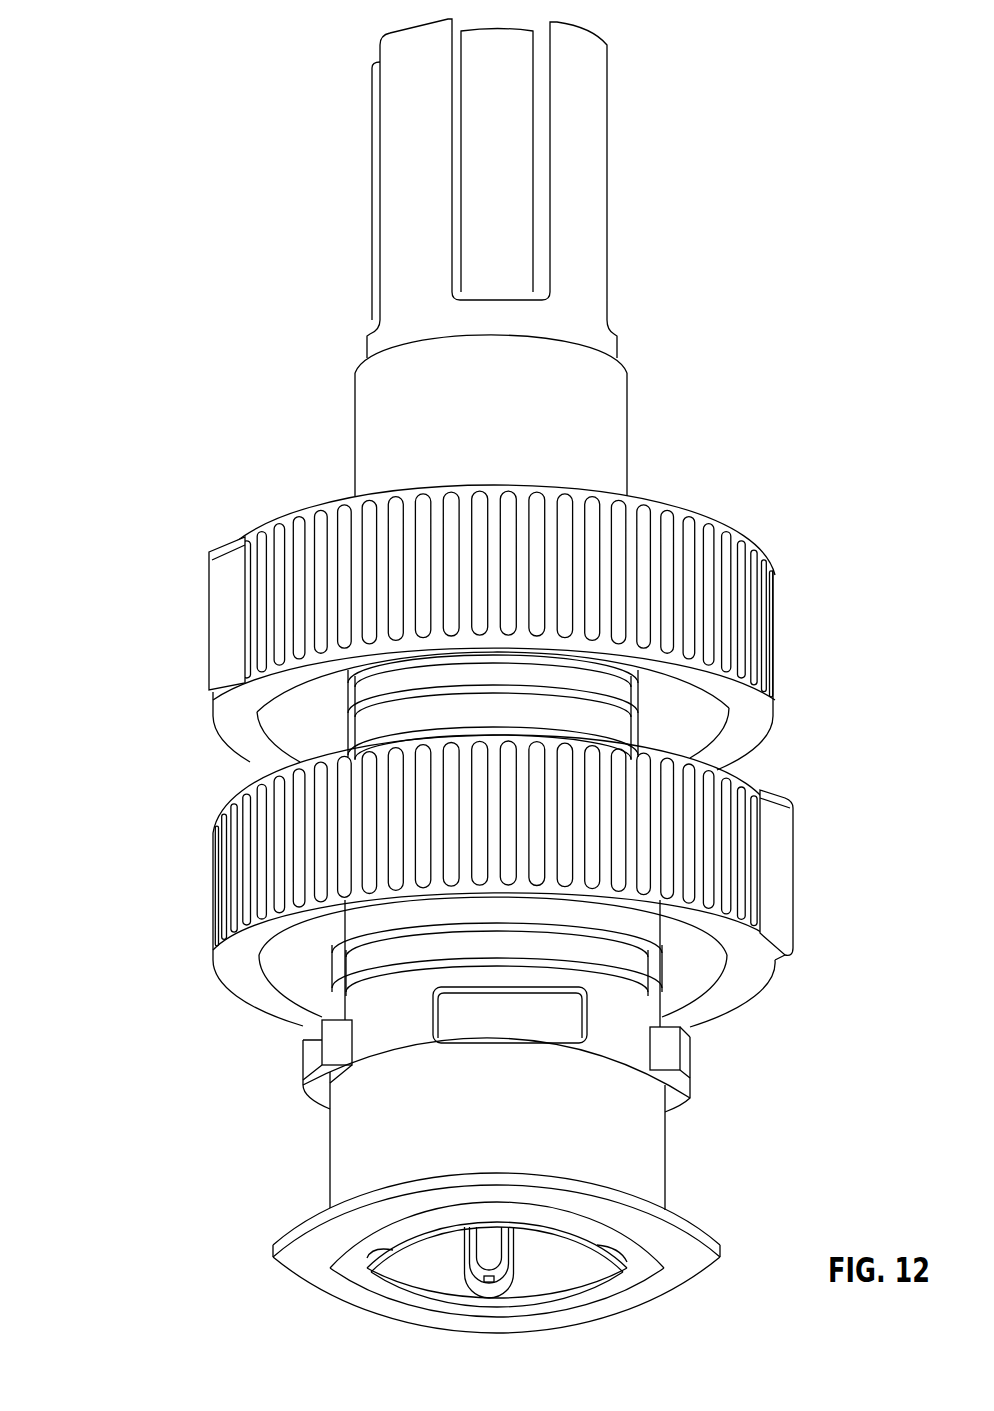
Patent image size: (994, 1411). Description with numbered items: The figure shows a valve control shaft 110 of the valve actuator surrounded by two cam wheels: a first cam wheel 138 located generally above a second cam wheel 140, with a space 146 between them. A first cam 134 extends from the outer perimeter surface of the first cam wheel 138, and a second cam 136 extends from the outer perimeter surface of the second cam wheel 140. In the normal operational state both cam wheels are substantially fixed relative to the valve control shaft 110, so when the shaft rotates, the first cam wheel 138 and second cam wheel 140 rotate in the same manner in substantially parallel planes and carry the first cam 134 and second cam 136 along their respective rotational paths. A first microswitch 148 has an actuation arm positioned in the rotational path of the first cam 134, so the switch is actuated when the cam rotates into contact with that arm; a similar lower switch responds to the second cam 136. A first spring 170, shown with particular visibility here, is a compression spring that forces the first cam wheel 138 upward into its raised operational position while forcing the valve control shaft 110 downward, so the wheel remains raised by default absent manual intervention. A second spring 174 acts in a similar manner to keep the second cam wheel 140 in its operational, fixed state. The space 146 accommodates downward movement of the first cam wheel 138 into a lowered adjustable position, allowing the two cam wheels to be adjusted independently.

The valve control shaft 110 is at (607, 137).
The first cam wheel 138 is at (695, 512).
The first cam 134 is at (225, 595).
The space 146 is at (238, 770).
The first spring 170 is at (642, 740).
The second cam wheel 140 is at (213, 860).
The second cam 136 is at (796, 880).
The second spring 174 is at (655, 945).
The first microswitch 148 is at (265, 1030).